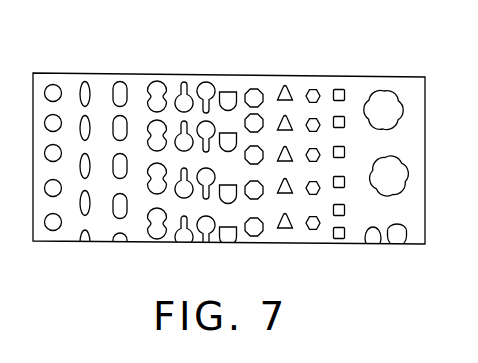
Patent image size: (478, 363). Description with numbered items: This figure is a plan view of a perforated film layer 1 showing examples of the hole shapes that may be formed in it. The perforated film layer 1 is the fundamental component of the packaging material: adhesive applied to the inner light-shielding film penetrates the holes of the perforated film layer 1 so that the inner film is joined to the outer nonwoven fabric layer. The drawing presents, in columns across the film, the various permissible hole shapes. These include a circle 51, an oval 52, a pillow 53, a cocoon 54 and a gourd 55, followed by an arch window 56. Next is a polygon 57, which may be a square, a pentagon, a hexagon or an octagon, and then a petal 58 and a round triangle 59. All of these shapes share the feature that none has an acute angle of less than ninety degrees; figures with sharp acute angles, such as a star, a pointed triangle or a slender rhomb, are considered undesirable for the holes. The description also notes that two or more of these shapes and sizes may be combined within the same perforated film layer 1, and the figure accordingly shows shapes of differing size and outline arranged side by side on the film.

The perforated film layer 1 is at (40, 73).
The circle 51 is at (51, 232).
The oval 52 is at (87, 212).
The pillow 53 is at (125, 218).
The cocoon 54 is at (157, 232).
The gourd 55 is at (186, 82).
The arch window 56 is at (228, 92).
The polygon 57 is at (285, 87).
The petal 58 is at (380, 87).
The round triangle 59 is at (398, 240).